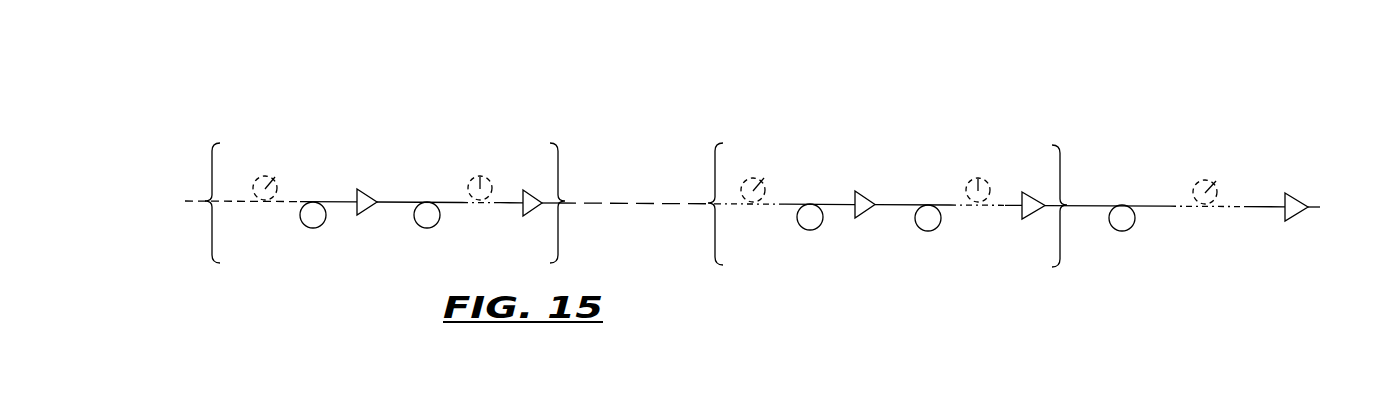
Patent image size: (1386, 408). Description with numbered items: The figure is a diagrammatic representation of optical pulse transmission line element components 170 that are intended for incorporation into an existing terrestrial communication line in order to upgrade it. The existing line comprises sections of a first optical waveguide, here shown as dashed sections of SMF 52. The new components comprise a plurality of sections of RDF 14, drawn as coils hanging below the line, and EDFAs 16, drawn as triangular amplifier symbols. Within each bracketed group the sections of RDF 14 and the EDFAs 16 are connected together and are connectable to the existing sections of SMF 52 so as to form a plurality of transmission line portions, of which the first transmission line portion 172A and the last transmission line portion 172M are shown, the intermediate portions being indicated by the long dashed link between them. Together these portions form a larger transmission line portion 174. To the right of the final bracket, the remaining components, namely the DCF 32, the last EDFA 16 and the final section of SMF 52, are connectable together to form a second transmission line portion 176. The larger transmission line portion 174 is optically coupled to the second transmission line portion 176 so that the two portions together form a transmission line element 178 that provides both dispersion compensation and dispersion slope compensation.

The RDF 14 is at (315, 217).
The EDFA 16 is at (362, 190).
The DCF 32 is at (1124, 221).
The SMF 52 is at (279, 169).
The optical pulse transmission line element components 170 is at (922, 95).
The transmission line portion 172A is at (392, 130).
The transmission line portion 172M is at (810, 140).
The larger transmission line portion 174 is at (677, 275).
The second transmission line portion 176 is at (1219, 270).
The transmission line element 178 is at (848, 293).